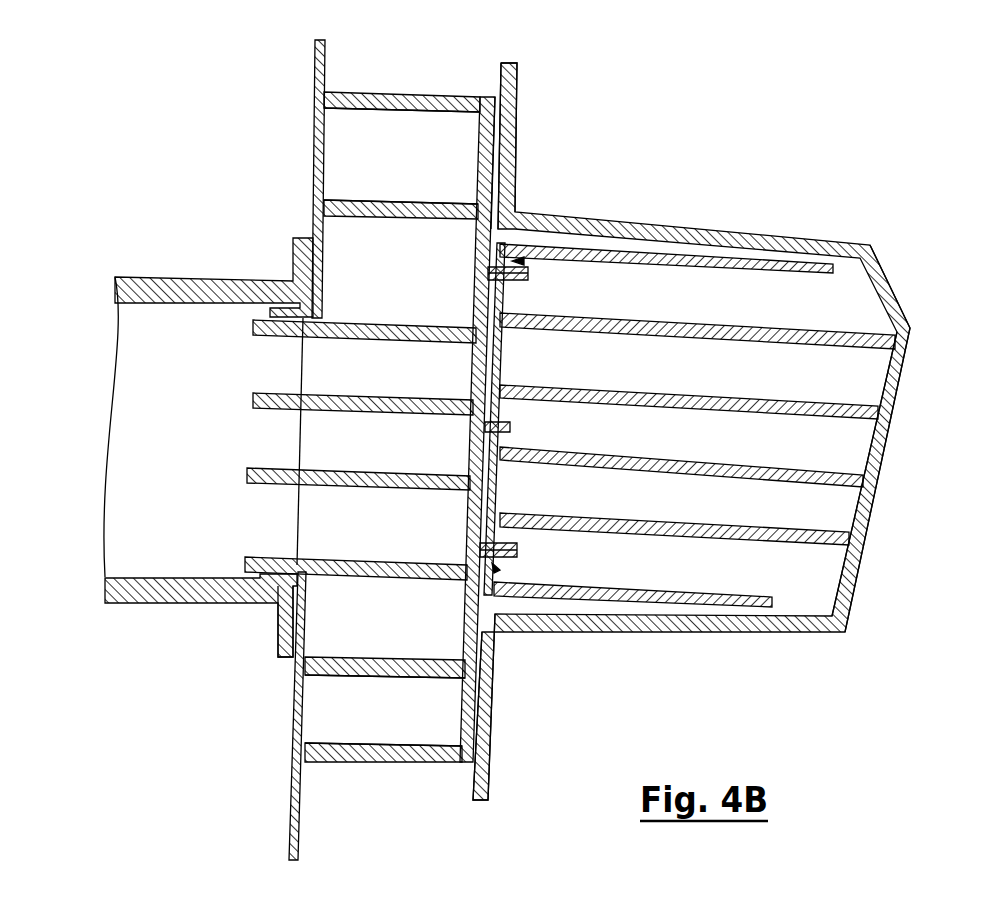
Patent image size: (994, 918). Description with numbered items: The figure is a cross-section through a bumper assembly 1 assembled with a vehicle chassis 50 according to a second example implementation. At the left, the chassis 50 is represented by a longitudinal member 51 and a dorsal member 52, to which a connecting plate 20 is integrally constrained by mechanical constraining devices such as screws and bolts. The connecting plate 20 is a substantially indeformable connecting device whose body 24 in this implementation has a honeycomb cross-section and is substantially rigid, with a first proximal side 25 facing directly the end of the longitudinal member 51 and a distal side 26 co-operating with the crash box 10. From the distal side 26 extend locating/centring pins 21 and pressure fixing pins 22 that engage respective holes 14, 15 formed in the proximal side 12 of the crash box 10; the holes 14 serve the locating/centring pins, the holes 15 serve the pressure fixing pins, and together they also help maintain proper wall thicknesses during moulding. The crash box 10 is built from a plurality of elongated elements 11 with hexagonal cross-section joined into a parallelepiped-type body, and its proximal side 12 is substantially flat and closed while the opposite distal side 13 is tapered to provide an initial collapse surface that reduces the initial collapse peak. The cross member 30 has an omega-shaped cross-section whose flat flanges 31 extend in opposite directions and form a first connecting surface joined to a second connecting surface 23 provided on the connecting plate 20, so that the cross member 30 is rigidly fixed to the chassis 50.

The bumper assembly 1 is at (862, 147).
The crash box 10 is at (866, 323).
The elongated elements 11 is at (784, 382).
The proximal side 12 is at (497, 350).
The distal side 13 is at (846, 270).
The holes for locating/centring pins 14 is at (568, 248).
The holes for pressure fixing pins 15 is at (520, 443).
The connecting plate 20 is at (440, 389).
The locating/centring pins 21 is at (522, 279).
The pressure fixing pins 22 is at (509, 428).
The second connecting surface 23 is at (518, 107).
The body 24 is at (396, 452).
The first proximal side 25 is at (358, 162).
The distal side 26 is at (476, 313).
The cross member 30 is at (897, 447).
The flat flanges 31 is at (512, 163).
The chassis 50 is at (216, 195).
The longitudinal member 51 is at (178, 612).
The dorsal member 52 is at (316, 96).